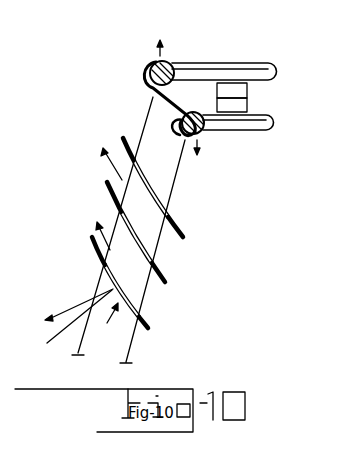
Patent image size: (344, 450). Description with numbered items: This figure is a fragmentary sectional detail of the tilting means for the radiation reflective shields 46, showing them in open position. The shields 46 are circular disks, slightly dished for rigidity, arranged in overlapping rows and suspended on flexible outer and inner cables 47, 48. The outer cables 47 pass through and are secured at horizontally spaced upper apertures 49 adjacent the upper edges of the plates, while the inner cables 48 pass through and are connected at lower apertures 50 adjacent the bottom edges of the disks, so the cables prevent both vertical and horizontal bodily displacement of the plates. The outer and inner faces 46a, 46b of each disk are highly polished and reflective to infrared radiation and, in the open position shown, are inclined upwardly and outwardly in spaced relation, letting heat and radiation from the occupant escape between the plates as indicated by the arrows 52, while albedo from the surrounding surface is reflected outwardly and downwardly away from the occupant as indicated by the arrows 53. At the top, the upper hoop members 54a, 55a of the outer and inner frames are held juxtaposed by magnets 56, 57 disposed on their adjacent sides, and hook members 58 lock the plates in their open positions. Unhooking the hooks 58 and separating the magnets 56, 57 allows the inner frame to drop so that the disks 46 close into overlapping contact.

The radiation reflective shields 46 is at (154, 188).
The outer face 46a is at (113, 323).
The inner face 46b is at (134, 296).
The outer cables 47 is at (148, 113).
The inner supporting flexible cables 48 is at (180, 168).
The upper apertures 49 is at (134, 160).
The lower apertures 50 is at (168, 214).
The arrows 52 is at (113, 166).
The arrows 53 is at (80, 315).
The upper hoop member 54a is at (202, 67).
The upper hoop member 55a is at (246, 132).
The magnet 56 is at (249, 91).
The magnet 57 is at (249, 105).
The hook members 58 is at (183, 110).